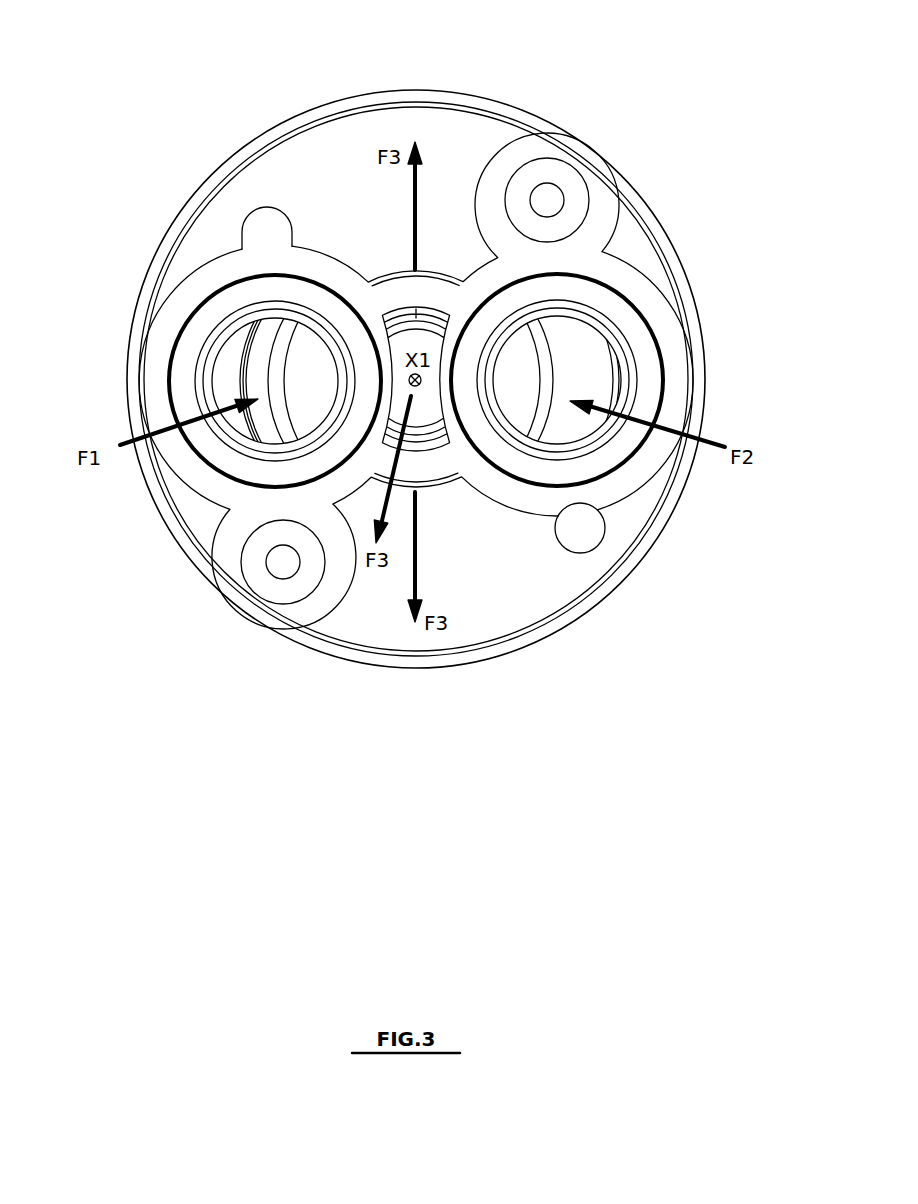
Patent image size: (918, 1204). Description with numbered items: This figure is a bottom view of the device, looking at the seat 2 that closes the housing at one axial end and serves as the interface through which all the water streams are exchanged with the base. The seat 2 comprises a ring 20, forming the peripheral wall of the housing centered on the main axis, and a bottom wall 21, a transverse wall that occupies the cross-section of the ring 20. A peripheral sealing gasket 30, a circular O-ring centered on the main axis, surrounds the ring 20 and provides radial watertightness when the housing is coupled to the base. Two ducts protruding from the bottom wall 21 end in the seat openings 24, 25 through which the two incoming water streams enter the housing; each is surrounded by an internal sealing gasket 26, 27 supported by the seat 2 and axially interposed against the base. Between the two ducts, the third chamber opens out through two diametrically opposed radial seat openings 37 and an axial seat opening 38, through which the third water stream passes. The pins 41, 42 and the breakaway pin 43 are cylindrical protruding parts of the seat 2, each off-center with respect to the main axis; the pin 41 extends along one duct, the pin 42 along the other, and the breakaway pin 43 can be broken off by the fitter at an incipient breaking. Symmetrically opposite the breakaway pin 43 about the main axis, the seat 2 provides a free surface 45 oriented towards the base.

The seat 2 is at (411, 372).
The ring 20 is at (518, 637).
The bottom wall 21 is at (362, 612).
The seat opening 24 is at (226, 378).
The seat opening 25 is at (580, 373).
The internal sealing gasket 26 is at (203, 323).
The internal sealing gasket 27 is at (619, 318).
The peripheral sealing gasket 30 is at (322, 103).
The radial seat opening 37 is at (443, 258).
The axial seat opening 38 is at (409, 333).
The pin 41 is at (267, 580).
The pin 42 is at (560, 175).
The breakaway pin 43 is at (580, 528).
The free surface 45 is at (265, 230).